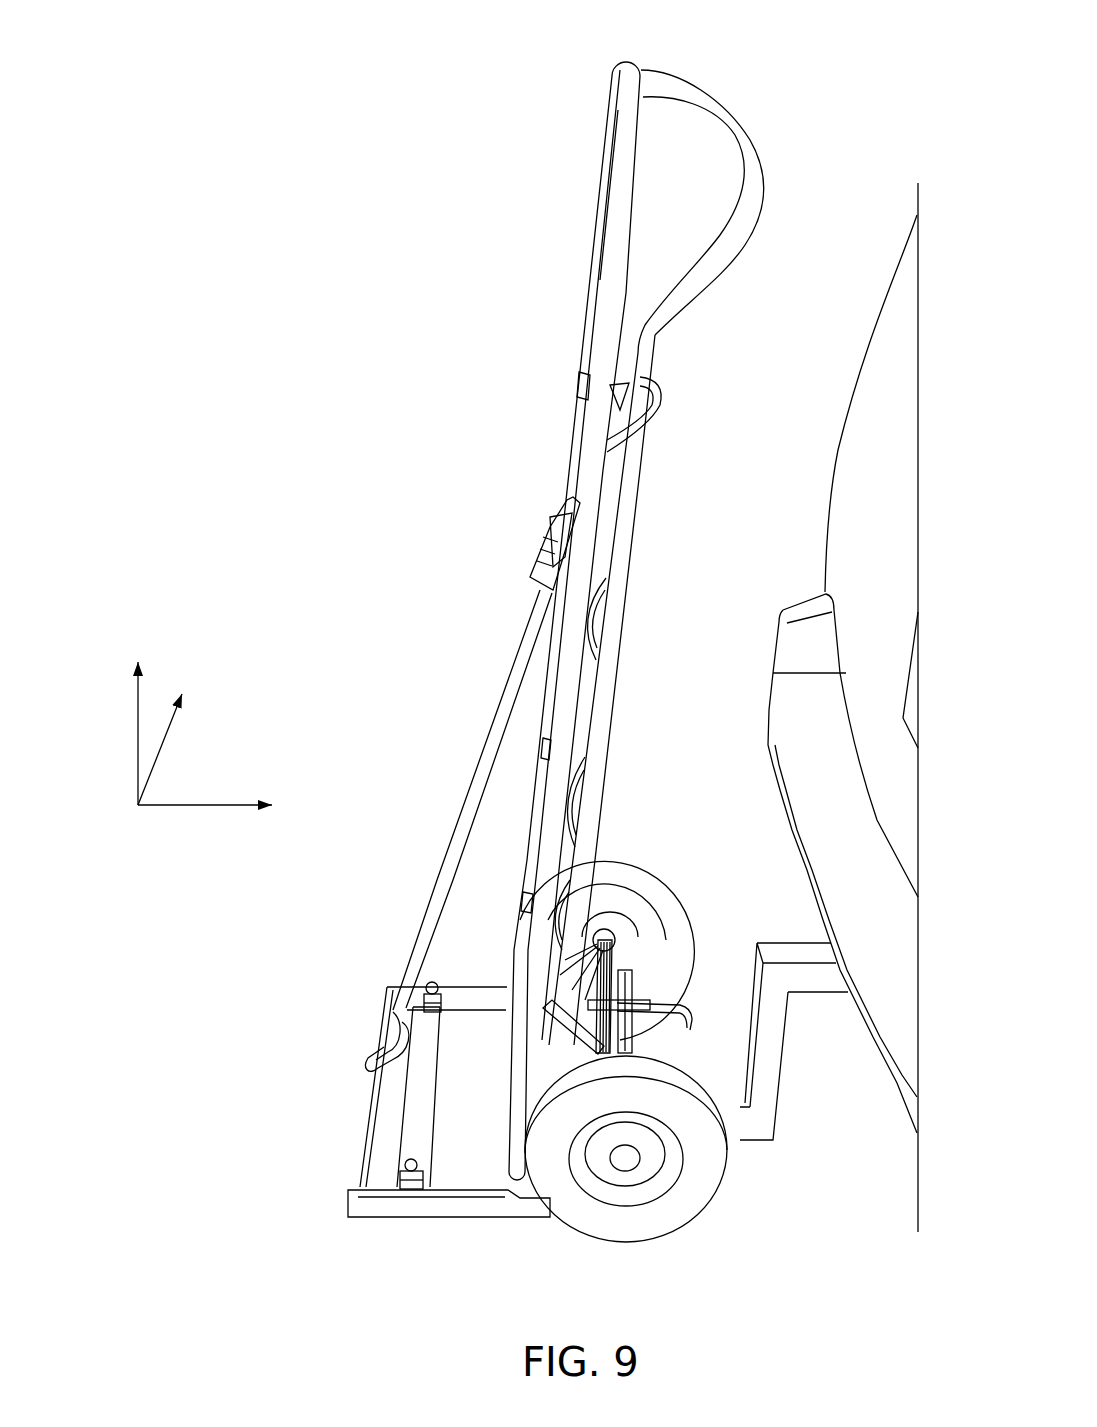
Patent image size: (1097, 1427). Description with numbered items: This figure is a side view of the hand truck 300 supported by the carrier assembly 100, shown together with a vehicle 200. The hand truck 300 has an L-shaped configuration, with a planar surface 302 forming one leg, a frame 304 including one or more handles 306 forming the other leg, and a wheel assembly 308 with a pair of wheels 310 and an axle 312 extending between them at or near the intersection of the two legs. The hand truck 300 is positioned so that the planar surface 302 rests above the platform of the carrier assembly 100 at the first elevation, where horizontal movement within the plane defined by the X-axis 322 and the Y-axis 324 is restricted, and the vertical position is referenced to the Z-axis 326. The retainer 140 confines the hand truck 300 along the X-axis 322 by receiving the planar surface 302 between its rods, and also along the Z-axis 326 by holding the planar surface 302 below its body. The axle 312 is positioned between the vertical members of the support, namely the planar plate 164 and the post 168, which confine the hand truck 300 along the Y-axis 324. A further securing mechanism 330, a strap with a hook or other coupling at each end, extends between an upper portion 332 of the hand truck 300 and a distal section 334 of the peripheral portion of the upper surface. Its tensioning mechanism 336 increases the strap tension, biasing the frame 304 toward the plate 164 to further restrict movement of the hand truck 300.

The carrier assembly 100 is at (478, 1228).
The retainer 140 is at (400, 1143).
The planar plate 164 is at (642, 958).
The post 168 is at (640, 996).
The vehicle 200 is at (870, 262).
The hand truck 300 is at (609, 56).
The planar surface 302 is at (392, 1130).
The frame 304 is at (600, 418).
The handle 306 is at (718, 108).
The wheel assembly 308 is at (688, 1240).
The wheel 310 is at (622, 870).
The axle 312 is at (640, 1043).
The X-axis 322 is at (184, 749).
The Y-axis 324 is at (205, 824).
The Z-axis 326 is at (110, 733).
The securing mechanism 330 is at (482, 773).
The upper portion 332 is at (510, 198).
The distal section 334 is at (360, 1096).
The tensioning mechanism 336 is at (538, 560).